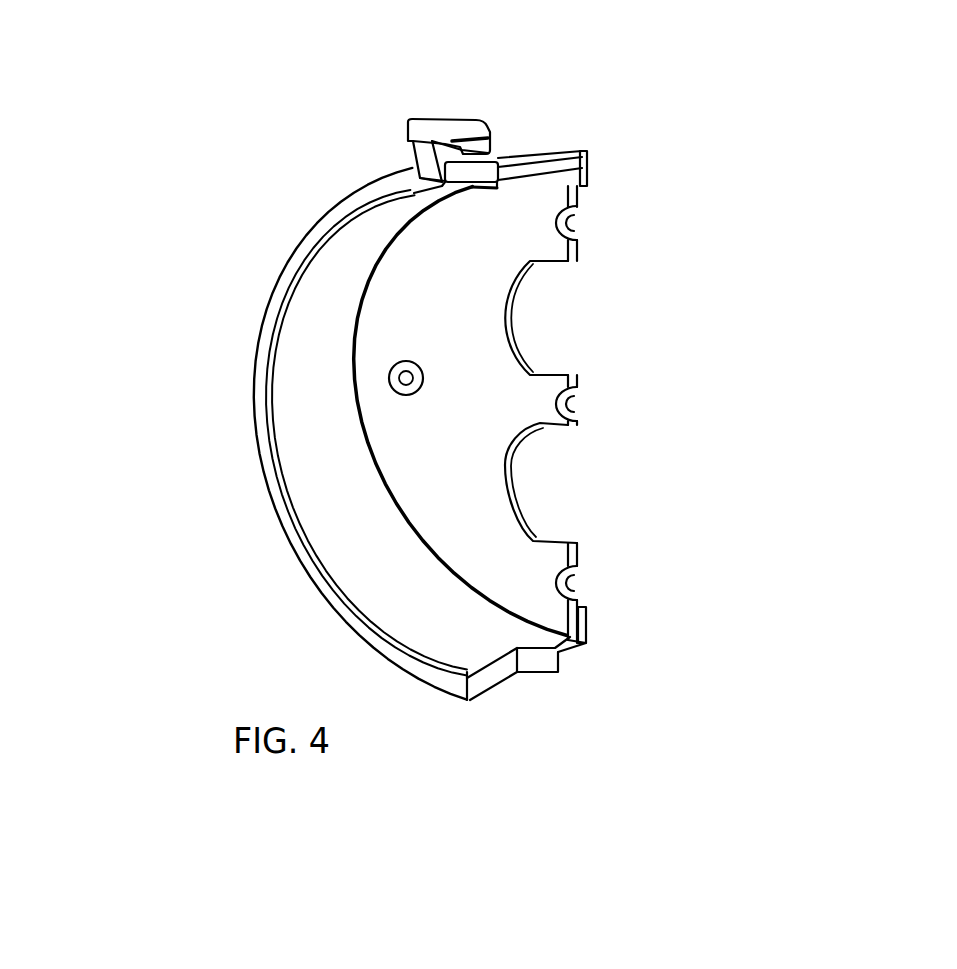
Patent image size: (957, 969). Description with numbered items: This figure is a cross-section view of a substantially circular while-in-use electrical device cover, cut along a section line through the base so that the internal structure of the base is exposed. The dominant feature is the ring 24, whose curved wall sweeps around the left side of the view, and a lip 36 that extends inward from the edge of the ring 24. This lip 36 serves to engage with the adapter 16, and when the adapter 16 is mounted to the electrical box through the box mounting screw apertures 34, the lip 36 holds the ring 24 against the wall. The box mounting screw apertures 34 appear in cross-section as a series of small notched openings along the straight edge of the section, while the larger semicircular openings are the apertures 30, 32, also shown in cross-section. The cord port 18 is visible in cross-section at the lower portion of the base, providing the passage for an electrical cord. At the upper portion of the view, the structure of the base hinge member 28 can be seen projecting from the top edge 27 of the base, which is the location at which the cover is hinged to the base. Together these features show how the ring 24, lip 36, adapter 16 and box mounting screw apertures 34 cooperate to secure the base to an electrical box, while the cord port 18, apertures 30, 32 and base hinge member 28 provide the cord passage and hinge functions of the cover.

The adapter 16 is at (580, 606).
The cord port 18 is at (497, 675).
The ring 24 is at (340, 578).
The top edge 27 is at (272, 323).
The base hinge member 28 is at (408, 137).
The aperture 30 is at (555, 330).
The aperture 32 is at (562, 492).
The box mounting screw apertures 34 is at (575, 583).
The lip 36 is at (586, 162).